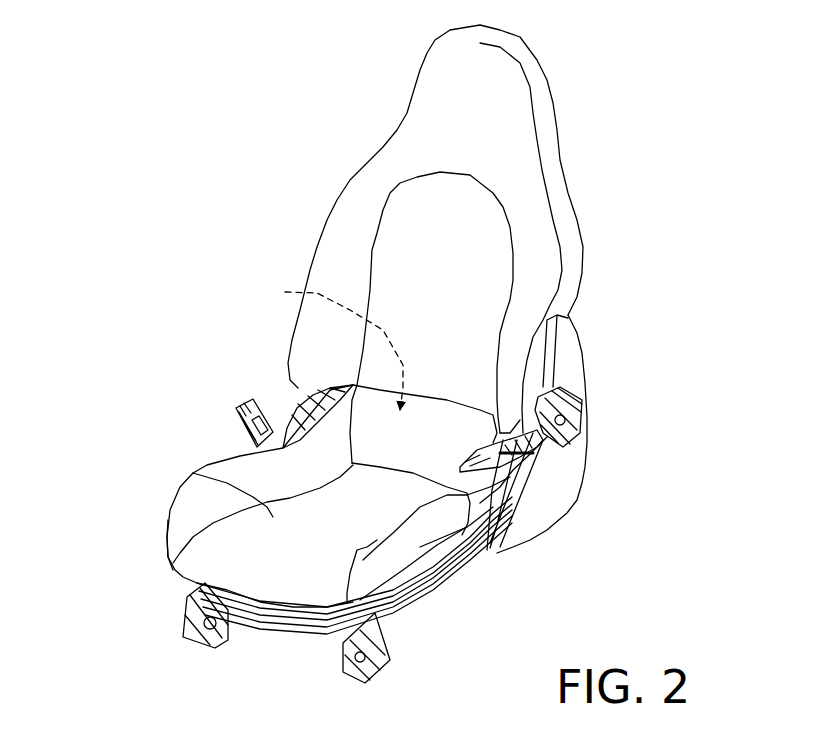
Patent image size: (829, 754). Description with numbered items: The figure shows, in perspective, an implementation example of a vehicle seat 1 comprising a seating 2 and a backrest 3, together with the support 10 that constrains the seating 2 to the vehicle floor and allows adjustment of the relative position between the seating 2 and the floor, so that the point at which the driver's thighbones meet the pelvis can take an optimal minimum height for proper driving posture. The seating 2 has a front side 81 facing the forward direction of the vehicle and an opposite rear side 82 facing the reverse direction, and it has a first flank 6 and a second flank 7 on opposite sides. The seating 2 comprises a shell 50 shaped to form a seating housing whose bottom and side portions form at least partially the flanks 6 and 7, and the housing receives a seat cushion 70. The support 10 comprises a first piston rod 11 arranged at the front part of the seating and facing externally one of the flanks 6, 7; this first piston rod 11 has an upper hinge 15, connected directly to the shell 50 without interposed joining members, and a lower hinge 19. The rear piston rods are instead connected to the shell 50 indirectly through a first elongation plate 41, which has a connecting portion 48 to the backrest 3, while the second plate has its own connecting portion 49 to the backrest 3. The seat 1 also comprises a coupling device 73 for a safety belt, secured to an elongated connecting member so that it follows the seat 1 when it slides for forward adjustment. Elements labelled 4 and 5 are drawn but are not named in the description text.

The vehicle seat 1 is at (270, 222).
The seating 2 is at (188, 444).
The backrest 3 is at (371, 116).
The seat cushion 4 is at (245, 527).
The backrest cushion 5 is at (514, 160).
The first flank 6 is at (387, 547).
The second flank 7 is at (226, 455).
The support 10 is at (470, 591).
The first piston rod 11 is at (433, 590).
The upper hinge 15 is at (470, 567).
The lower hinge 19 is at (422, 607).
The first elongation plate 41 is at (567, 477).
The connecting portion 48 is at (497, 372).
The connecting portion 49 is at (297, 400).
The shell 50 is at (260, 627).
The seat cushion 70 is at (190, 472).
The coupling device 73 is at (234, 406).
The front side 81 is at (222, 567).
The rear side 82 is at (285, 292).